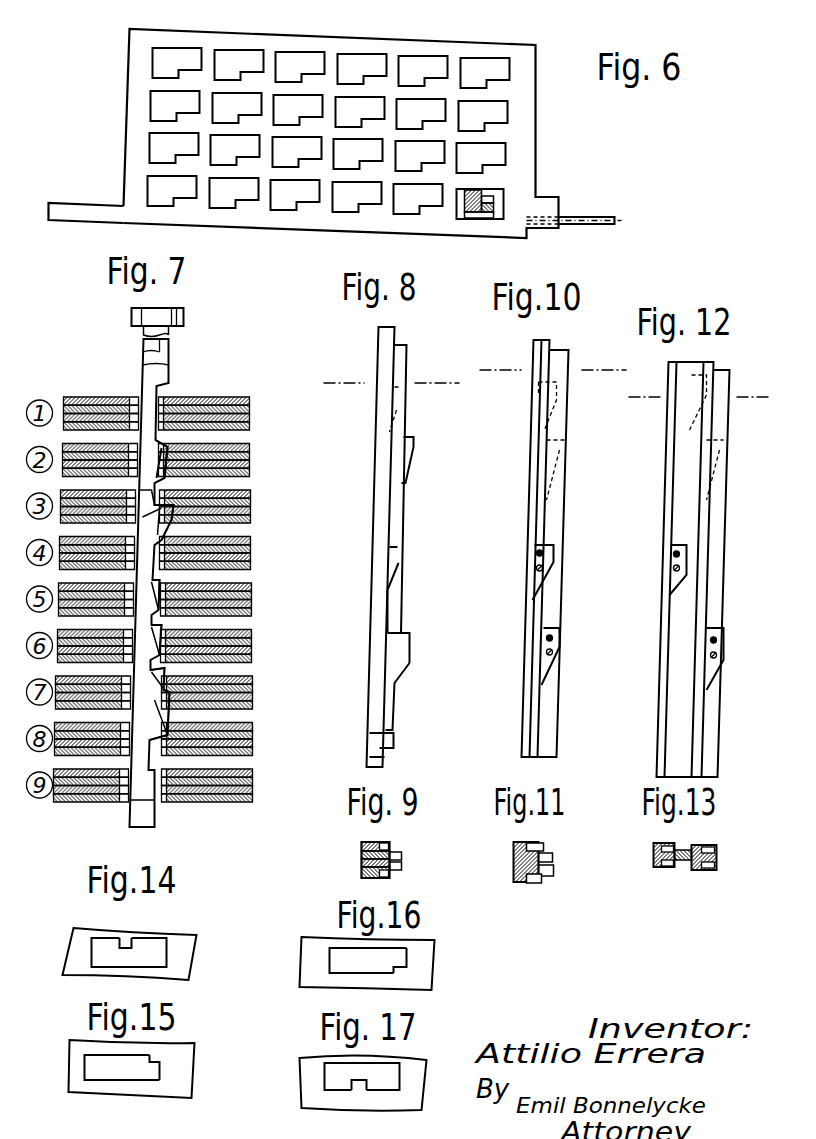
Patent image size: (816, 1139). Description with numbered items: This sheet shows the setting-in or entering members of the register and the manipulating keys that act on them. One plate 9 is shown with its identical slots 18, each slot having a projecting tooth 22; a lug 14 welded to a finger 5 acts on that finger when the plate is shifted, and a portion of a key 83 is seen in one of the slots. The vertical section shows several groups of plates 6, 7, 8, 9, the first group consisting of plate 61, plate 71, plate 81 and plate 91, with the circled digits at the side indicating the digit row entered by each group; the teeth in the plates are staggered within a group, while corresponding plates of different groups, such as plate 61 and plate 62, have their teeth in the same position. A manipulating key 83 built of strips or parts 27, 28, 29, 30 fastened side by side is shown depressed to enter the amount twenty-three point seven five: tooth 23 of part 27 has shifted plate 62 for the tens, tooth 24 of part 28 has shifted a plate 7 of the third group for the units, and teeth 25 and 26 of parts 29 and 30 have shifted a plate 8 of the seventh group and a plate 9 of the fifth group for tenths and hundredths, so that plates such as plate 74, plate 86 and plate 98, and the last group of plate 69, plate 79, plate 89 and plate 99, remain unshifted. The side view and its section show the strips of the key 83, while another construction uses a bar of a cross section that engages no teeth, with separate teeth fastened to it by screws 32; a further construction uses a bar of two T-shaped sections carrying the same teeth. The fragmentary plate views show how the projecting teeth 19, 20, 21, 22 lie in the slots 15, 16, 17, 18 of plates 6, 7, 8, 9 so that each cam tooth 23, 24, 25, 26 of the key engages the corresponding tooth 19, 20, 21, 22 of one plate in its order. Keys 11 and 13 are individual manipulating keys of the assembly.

In FIG. 6, the finger 5 is at (585, 223).
In FIG. 14, the plate 6 is at (78, 945).
In FIG. 15, the plate 7 is at (75, 1052).
In FIG. 16, the plate 8 is at (312, 958).
In FIG. 6, the plate 9 is at (378, 46).
In FIG. 8, the plate 9 is at (392, 371).
In FIG. 17, the plate 9 is at (305, 1073).
In FIG. 10, the manipulating key 11 is at (553, 357).
In FIG. 6, the manipulating key 13 is at (82, 214).
In FIG. 12, the manipulating key 13 is at (700, 384).
In FIG. 6, the lug 14 is at (548, 210).
In FIG. 14, the slot 15 is at (158, 956).
In FIG. 15, the slot 16 is at (138, 1072).
In FIG. 16, the slot 17 is at (375, 961).
In FIG. 6, the slot 18 is at (178, 58).
In FIG. 17, the slot 18 is at (385, 1082).
In FIG. 14, the projecting tooth 19 is at (124, 945).
In FIG. 15, the projecting tooth 20 is at (152, 1060).
In FIG. 16, the projecting tooth 21 is at (396, 970).
In FIG. 6, the projecting tooth 22 is at (487, 86).
In FIG. 17, the projecting tooth 22 is at (357, 1090).
In FIG. 7, the cam tooth 23 is at (160, 452).
In FIG. 8, the cam tooth 23 is at (396, 408).
In FIG. 9, the cam tooth 23 is at (385, 846).
In FIG. 10, the cam tooth 23 is at (553, 398).
In FIG. 11, the cam tooth 23 is at (536, 847).
In FIG. 12, the cam tooth 23 is at (683, 395).
In FIG. 13, the cam tooth 23 is at (668, 850).
In FIG. 7, the cam tooth 24 is at (170, 532).
In FIG. 8, the cam tooth 24 is at (405, 455).
In FIG. 9, the cam tooth 24 is at (398, 856).
In FIG. 10, the cam tooth 24 is at (558, 456).
In FIG. 11, the cam tooth 24 is at (549, 857).
In FIG. 12, the cam tooth 24 is at (718, 456).
In FIG. 13, the cam tooth 24 is at (707, 850).
In FIG. 7, the cam tooth 25 is at (172, 720).
In FIG. 8, the cam tooth 25 is at (400, 648).
In FIG. 9, the cam tooth 25 is at (398, 866).
In FIG. 10, the cam tooth 25 is at (556, 650).
In FIG. 11, the cam tooth 25 is at (549, 870).
In FIG. 12, the cam tooth 25 is at (715, 651).
In FIG. 13, the cam tooth 25 is at (705, 868).
In FIG. 7, the cam tooth 26 is at (152, 631).
In FIG. 8, the cam tooth 26 is at (392, 570).
In FIG. 9, the cam tooth 26 is at (385, 874).
In FIG. 10, the cam tooth 26 is at (548, 563).
In FIG. 11, the cam tooth 26 is at (532, 881).
In FIG. 12, the cam tooth 26 is at (675, 578).
In FIG. 13, the cam tooth 26 is at (668, 867).
In FIG. 6, the key part 27 is at (470, 191).
In FIG. 7, the key part 27 is at (148, 437).
In FIG. 8, the key part 27 is at (375, 758).
In FIG. 9, the key part 27 is at (365, 845).
In FIG. 6, the key part 28 is at (486, 200).
In FIG. 7, the key part 28 is at (145, 515).
In FIG. 8, the key part 28 is at (383, 742).
In FIG. 9, the key part 28 is at (362, 853).
In FIG. 6, the key part 29 is at (492, 207).
In FIG. 7, the key part 29 is at (145, 690).
In FIG. 8, the key part 29 is at (388, 628).
In FIG. 9, the key part 29 is at (362, 862).
In FIG. 6, the key part 30 is at (481, 216).
In FIG. 7, the key part 30 is at (140, 612).
In FIG. 8, the key part 30 is at (375, 562).
In FIG. 9, the key part 30 is at (362, 874).
In FIG. 10, the screw 32 is at (541, 554).
In FIG. 12, the screw 32 is at (672, 555).
In FIG. 6, the manipulating key 83 is at (566, 100).
In FIG. 7, the manipulating key 83 is at (140, 328).
In FIG. 8, the manipulating key 83 is at (374, 493).
In FIG. 10, the manipulating key 83 is at (524, 603).
In FIG. 11, the manipulating key 83 is at (515, 856).
In FIG. 12, the manipulating key 83 is at (672, 667).
In FIG. 13, the manipulating key 83 is at (653, 860).
In FIG. 7, the plate 6.1 61 is at (82, 402).
In FIG. 7, the plate 7.1 71 is at (100, 411).
In FIG. 7, the plate 8.1 81 is at (218, 416).
In FIG. 7, the plate 9.1 91 is at (250, 425).
In FIG. 7, the plate 6.2 62 is at (245, 450).
In FIG. 7, the plate 7.4 74 is at (245, 556).
In FIG. 7, the plate 8.6 86 is at (235, 652).
In FIG. 7, the plate 9.8 98 is at (240, 752).
In FIG. 7, the plate 6.9 69 is at (238, 773).
In FIG. 7, the plate 7.9 79 is at (240, 782).
In FIG. 7, the plate 8.9 89 is at (240, 790).
In FIG. 7, the plate 9.9 99 is at (238, 800).